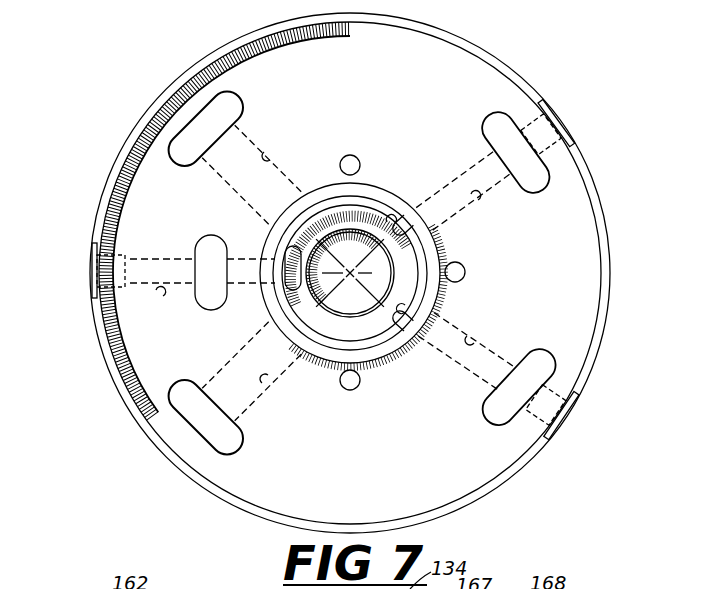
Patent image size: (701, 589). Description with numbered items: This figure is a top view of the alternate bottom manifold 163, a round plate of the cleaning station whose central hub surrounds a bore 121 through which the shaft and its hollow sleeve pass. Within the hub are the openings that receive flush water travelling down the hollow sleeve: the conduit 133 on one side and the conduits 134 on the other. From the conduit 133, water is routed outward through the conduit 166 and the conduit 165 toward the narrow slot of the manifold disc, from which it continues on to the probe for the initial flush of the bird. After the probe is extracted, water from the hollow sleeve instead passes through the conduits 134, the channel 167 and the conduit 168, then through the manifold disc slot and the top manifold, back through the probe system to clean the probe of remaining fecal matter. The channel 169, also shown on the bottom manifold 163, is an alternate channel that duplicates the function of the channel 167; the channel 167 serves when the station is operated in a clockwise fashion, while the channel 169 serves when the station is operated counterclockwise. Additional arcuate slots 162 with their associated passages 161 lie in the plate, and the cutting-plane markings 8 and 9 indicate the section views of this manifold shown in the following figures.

The hub bore 121 is at (385, 276).
The conduit 133 is at (287, 285).
The conduit 134 is at (393, 216).
The hidden passage 161 is at (273, 154).
The arcuate slot 162 is at (240, 99).
The alternate bottom manifold 163 is at (503, 57).
The conduit 165 is at (212, 238).
The conduit 166 is at (160, 300).
The channel 167 is at (478, 207).
The conduit 168 is at (492, 127).
The channel 169 is at (480, 341).
The section line 8- 8 is at (203, 123).
The section line 9- 9 is at (135, 268).